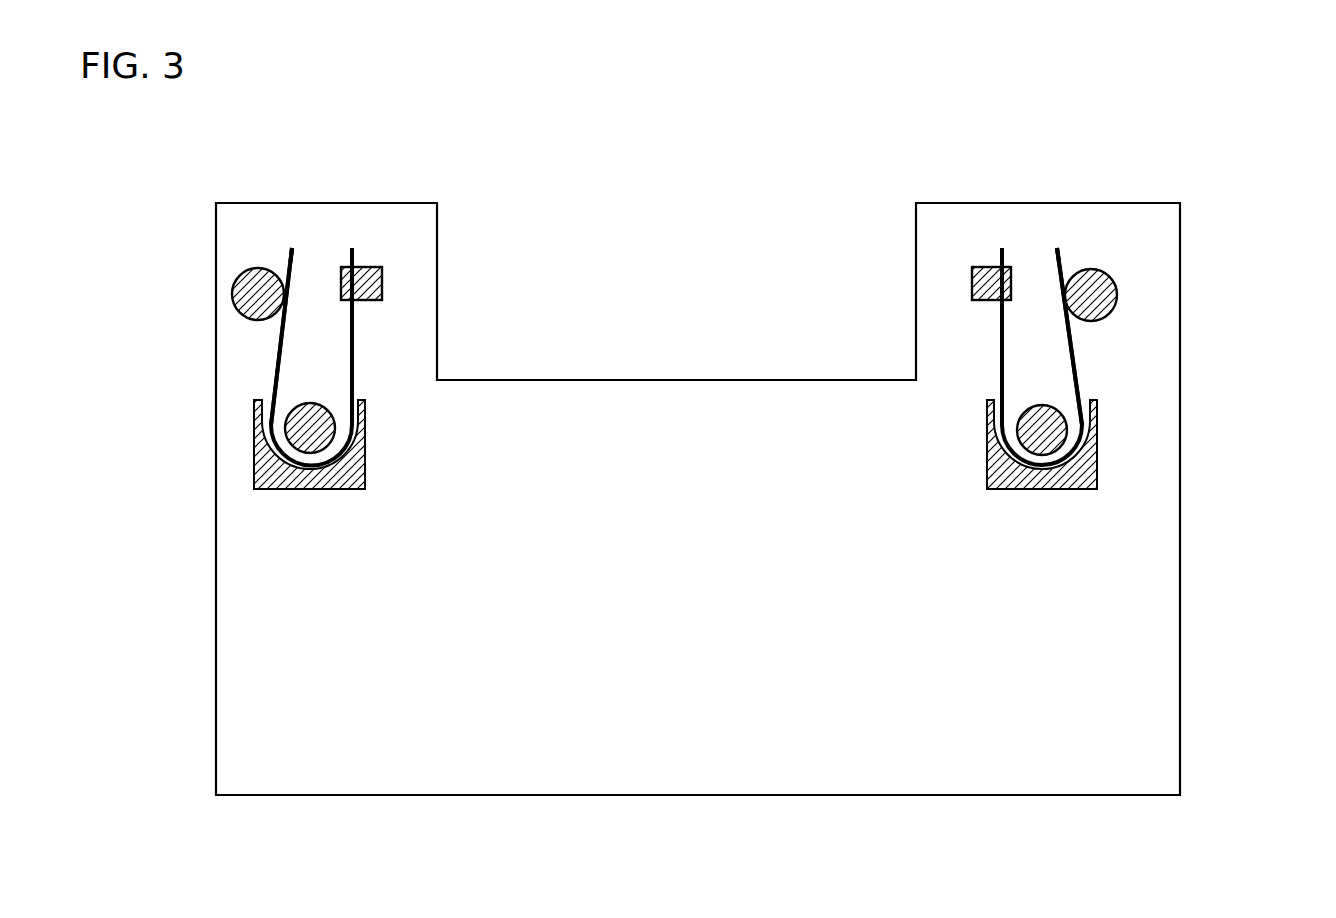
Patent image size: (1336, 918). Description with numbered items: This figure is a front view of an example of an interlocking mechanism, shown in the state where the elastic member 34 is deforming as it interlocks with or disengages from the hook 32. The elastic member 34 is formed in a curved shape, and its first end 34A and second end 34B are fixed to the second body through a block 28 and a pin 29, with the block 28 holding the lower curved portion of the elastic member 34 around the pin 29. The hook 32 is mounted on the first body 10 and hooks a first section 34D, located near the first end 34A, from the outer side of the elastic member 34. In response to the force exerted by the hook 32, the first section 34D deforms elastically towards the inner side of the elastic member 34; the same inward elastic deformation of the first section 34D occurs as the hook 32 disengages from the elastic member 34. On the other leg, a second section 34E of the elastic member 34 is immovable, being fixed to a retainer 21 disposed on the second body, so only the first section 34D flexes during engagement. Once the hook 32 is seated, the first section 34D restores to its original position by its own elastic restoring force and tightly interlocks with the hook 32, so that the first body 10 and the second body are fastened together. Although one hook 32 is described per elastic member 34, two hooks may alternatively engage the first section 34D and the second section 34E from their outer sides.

The first body 10 is at (1181, 544).
The retainer 21 is at (376, 285).
The block 28 is at (360, 472).
The pin 29 is at (300, 418).
The hook 32 is at (243, 292).
The elastic member 34 is at (689, 308).
The first end 34A is at (292, 249).
The second end 34B is at (355, 250).
The first section 34D is at (290, 256).
The second section 34E is at (355, 255).